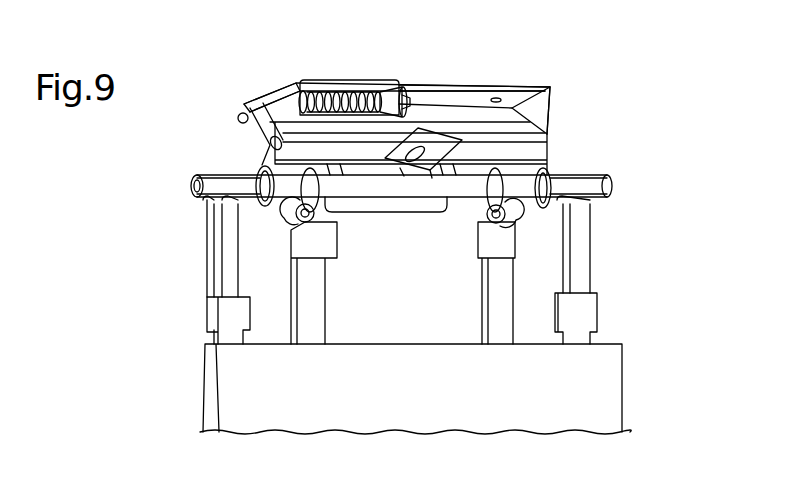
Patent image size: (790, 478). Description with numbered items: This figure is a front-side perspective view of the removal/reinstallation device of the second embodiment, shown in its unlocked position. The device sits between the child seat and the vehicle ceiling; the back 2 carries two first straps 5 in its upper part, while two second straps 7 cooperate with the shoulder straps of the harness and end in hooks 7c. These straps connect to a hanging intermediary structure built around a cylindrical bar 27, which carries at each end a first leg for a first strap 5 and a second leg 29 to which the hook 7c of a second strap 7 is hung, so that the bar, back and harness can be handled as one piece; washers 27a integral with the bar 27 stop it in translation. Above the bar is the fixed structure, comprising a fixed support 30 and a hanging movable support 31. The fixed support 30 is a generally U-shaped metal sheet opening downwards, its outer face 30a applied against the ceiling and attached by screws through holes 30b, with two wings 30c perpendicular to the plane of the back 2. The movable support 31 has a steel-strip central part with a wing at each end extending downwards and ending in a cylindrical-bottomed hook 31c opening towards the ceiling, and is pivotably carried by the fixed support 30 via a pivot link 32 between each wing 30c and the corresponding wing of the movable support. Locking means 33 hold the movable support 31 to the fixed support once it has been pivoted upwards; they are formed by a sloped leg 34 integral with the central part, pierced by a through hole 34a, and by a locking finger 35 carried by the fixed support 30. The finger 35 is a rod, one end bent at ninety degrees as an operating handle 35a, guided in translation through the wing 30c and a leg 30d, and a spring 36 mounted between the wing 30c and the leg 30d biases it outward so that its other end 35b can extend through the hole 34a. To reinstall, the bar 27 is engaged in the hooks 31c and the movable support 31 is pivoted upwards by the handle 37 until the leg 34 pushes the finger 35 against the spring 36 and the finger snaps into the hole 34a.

The back 2 is at (613, 390).
The first strap 5 is at (236, 314).
The second strap 7 is at (320, 325).
The hook 7c is at (292, 238).
The cylindrical bar 27 is at (608, 186).
The washer 27a is at (255, 168).
The second leg 29 is at (318, 225).
The fixed support 30 is at (548, 80).
The outer face 30a is at (478, 86).
The hole 30b is at (500, 100).
The wing 30c is at (276, 90).
The leg 30d is at (391, 92).
The movable support 31 is at (532, 152).
The hook 31c is at (243, 215).
The pivot link 32 is at (240, 116).
The locking means 33 is at (256, 97).
The leg 34 is at (422, 130).
The through hole 34a is at (418, 148).
The locking finger 35 is at (352, 92).
The operating handle 35a is at (262, 143).
The end 35b is at (406, 94).
The spring 36 is at (334, 92).
The handle 37 is at (382, 210).